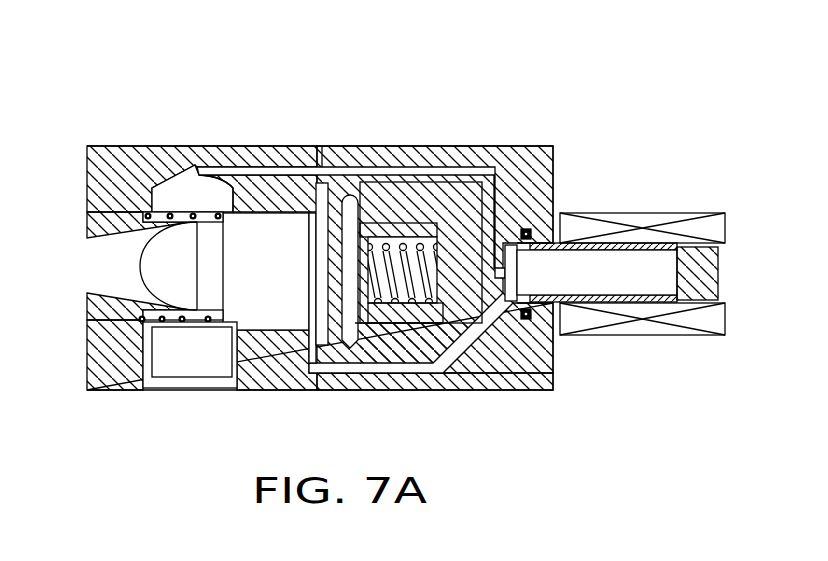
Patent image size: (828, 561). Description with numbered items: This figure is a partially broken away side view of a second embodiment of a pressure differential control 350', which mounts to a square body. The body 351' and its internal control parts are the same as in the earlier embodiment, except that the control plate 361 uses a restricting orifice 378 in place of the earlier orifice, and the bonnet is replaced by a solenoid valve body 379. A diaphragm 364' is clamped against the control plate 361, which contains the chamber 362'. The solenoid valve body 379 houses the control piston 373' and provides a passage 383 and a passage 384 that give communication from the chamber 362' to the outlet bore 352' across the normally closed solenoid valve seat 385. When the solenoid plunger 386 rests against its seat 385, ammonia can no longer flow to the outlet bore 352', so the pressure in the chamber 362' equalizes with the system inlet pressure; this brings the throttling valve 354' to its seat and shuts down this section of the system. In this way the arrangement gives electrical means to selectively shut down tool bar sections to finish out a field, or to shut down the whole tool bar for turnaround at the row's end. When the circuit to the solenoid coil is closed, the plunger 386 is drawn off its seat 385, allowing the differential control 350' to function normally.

The differential control 350' is at (320, 209).
The body 351' is at (200, 293).
The outlet bore 352' is at (192, 376).
The throttling valve 354' is at (238, 192).
The control plate 361 is at (343, 145).
The chamber 362' is at (300, 312).
The diaphragm 364' is at (414, 379).
The control piston 373' is at (421, 206).
The restricting orifice 378 is at (347, 357).
The solenoid valve body 379 is at (468, 332).
The passage 383 is at (490, 178).
The passage 384 is at (500, 375).
The solenoid valve seat 385 is at (535, 230).
The solenoid plunger 386 is at (643, 265).